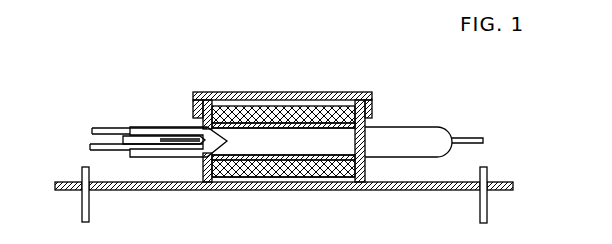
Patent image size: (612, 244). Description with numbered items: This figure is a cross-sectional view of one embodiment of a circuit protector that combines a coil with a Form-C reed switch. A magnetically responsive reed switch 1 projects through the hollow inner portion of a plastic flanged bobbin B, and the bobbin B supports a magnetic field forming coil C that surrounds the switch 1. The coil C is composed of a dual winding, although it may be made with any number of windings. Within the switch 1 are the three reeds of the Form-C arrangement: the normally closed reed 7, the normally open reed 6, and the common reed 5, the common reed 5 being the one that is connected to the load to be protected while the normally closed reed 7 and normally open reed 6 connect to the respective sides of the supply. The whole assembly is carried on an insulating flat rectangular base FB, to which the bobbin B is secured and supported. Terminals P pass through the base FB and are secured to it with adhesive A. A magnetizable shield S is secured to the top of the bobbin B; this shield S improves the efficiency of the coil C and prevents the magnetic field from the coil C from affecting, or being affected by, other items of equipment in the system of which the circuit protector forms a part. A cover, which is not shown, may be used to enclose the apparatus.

The reed switch 1 is at (412, 127).
The common reed 5 is at (476, 139).
The normally open reed 6 is at (110, 150).
The normally closed reed 7 is at (111, 128).
The coil C is at (283, 106).
The shield S is at (372, 96).
The bobbin B is at (367, 162).
The adhesive A is at (78, 180).
The terminals P is at (81, 206).
The base FB is at (497, 190).